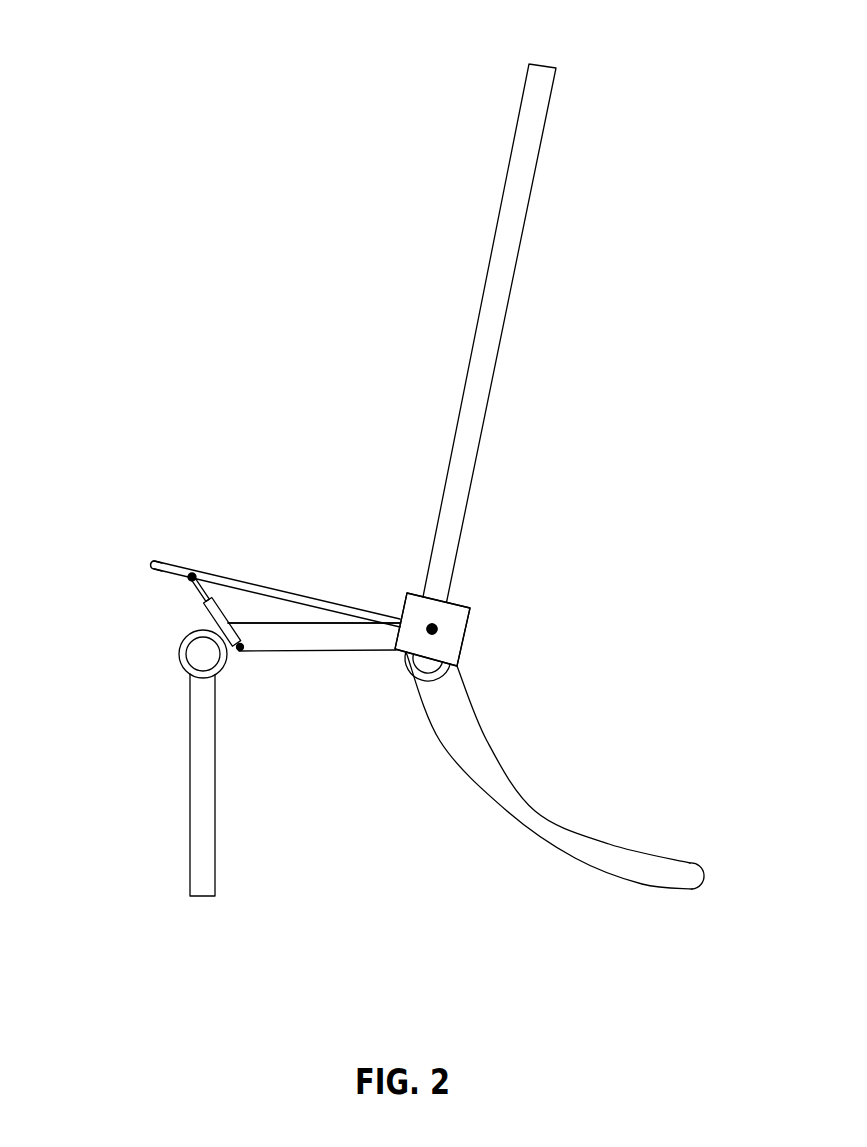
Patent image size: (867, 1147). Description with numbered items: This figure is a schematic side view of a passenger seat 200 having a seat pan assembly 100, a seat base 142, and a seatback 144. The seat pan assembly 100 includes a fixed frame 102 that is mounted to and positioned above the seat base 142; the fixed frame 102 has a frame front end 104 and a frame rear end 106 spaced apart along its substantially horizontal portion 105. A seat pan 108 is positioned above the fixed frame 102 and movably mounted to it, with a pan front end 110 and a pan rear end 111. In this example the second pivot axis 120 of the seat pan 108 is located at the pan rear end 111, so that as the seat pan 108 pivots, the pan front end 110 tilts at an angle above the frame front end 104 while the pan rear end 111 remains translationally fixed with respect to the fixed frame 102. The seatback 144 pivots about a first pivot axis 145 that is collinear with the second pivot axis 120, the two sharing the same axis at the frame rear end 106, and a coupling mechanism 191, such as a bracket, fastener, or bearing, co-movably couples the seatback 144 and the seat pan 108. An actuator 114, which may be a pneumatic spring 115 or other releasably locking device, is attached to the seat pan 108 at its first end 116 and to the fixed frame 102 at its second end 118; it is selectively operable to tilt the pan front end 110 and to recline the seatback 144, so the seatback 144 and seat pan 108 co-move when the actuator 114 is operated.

The passenger seat 200 is at (699, 44).
The seatback 144 is at (488, 317).
The seat base 142 is at (532, 810).
The pan rear end 111 is at (404, 592).
The coupling mechanism 191 is at (457, 613).
The second pivot axis 120 is at (436, 628).
The first pivot axis 145 is at (432, 629).
The frame rear end 106 is at (380, 641).
The fixed frame 102 is at (282, 640).
The substantially horizontal portion 105 is at (345, 638).
The seat pan 108 is at (219, 576).
The pan front end 110 is at (153, 562).
The seat pan assembly 100 is at (192, 544).
The first end 116 is at (186, 577).
The pneumatic spring 115 is at (179, 597).
The actuator 114 is at (207, 613).
The second end 118 is at (240, 650).
The frame front end 104 is at (196, 628).